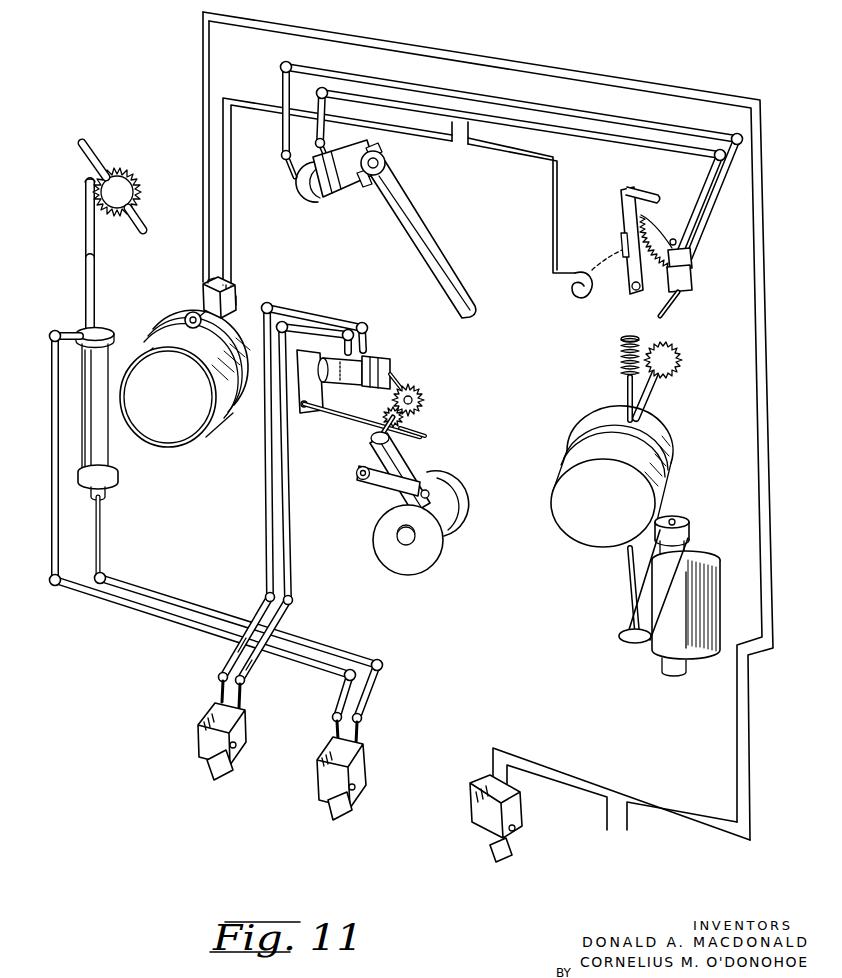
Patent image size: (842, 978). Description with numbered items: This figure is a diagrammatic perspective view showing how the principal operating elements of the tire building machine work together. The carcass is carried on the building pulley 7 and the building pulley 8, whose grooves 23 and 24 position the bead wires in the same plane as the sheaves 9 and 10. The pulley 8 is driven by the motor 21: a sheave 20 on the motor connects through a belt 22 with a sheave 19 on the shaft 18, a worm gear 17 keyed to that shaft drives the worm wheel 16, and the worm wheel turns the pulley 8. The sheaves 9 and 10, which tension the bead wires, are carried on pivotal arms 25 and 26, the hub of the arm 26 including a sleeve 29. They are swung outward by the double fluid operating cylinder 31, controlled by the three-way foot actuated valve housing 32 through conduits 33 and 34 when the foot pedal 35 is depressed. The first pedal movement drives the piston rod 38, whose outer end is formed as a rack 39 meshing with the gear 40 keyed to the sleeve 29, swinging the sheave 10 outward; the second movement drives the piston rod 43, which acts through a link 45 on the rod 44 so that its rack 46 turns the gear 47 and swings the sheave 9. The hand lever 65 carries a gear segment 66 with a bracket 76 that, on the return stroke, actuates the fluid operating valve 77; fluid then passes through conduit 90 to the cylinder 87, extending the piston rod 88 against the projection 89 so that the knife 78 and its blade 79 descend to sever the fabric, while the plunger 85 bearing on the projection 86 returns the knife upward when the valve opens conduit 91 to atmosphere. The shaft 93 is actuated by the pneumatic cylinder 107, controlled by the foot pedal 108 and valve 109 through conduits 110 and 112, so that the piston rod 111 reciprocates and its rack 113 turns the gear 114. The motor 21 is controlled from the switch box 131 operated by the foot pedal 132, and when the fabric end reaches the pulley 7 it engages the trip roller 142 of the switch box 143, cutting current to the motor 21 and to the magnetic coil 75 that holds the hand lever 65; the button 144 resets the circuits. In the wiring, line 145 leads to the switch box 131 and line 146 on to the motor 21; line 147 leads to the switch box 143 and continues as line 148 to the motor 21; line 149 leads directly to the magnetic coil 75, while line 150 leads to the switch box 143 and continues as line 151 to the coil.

The pulley 7 is at (232, 410).
The pulley 8 is at (661, 489).
The sheave 9 is at (419, 566).
The sheave 10 is at (452, 515).
The worm wheel 16 is at (682, 370).
The worm gear 17 is at (618, 362).
The shaft 18 is at (626, 400).
The sheave 19 is at (622, 637).
The sheave 20 is at (690, 528).
The motor 21 is at (660, 653).
The belt 22 is at (628, 576).
The groove 23 is at (160, 347).
The groove 24 is at (668, 468).
The pivotal arm 25 is at (360, 490).
The pivotal arm 26 is at (432, 480).
The sleeve 29 is at (370, 446).
The double fluid operating cylinder 31 is at (372, 362).
The three-way foot actuated valve housing 32 is at (198, 719).
The conduit 33 is at (234, 653).
The conduit 34 is at (247, 672).
The foot pedal 35 is at (214, 782).
The piston rod 38 is at (402, 388).
The gear 39 is at (423, 397).
The gear 40 is at (399, 429).
The piston rod 43 is at (320, 352).
The rod 44 is at (309, 418).
The link 45 is at (288, 345).
The rack 46 is at (426, 437).
The gear 47 is at (405, 417).
The hand lever 65 is at (650, 190).
The gear segment 66 is at (657, 212).
The magnetic coil 75 is at (584, 266).
The bracket 76 is at (693, 258).
The fluid operating valve 77 is at (693, 281).
The knife 78 is at (441, 251).
The blade 79 is at (431, 275).
The plunger 85 is at (347, 200).
The projection 86 is at (367, 190).
The fluid operating cylinder 87 is at (304, 206).
The piston rod 88 is at (372, 146).
The projection 89 is at (386, 160).
The conduit 90 is at (612, 115).
The conduit 91 is at (682, 149).
The shaft 93 is at (93, 150).
The pneumatic cylinder 107 is at (103, 453).
The foot pedal 108 is at (335, 818).
The fluid operating valve 109 is at (368, 766).
The conduit 110 is at (203, 612).
The piston rod 111 is at (85, 290).
The conduit 112 is at (146, 607).
The rack 113 is at (85, 201).
The gear 114 is at (131, 187).
The switch box 131 is at (471, 804).
The foot pedal 132 is at (490, 855).
The trip roller 142 is at (185, 316).
The electrical switch box 143 is at (209, 283).
The button 144 is at (226, 297).
The line 145 is at (563, 780).
The line 146 is at (553, 763).
The line 147 is at (652, 806).
The line 148 is at (760, 322).
The line 149 is at (553, 151).
The line 150 is at (447, 150).
The line 151 is at (480, 148).